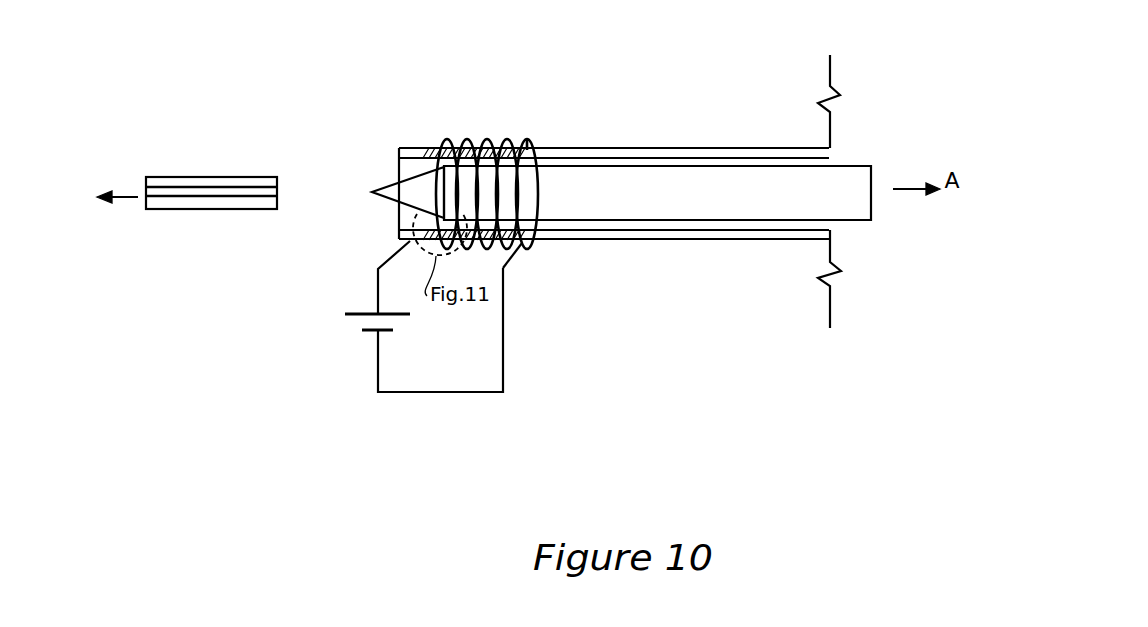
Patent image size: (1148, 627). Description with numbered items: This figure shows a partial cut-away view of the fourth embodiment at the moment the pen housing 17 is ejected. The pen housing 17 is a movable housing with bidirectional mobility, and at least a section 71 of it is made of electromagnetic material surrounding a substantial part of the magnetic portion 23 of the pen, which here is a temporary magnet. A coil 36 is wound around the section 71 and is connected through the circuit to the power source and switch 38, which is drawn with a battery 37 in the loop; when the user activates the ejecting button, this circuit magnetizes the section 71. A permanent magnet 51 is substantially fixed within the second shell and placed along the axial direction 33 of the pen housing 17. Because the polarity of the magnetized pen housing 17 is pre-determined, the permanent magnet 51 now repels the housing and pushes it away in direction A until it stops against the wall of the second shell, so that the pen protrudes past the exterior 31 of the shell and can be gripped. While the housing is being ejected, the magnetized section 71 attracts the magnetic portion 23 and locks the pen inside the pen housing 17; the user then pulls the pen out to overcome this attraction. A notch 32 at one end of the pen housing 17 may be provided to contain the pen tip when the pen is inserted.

The pen housing 17 is at (690, 147).
The magnetic portion 23 is at (467, 147).
The exterior 31 is at (832, 120).
The notch 32 is at (386, 180).
The axial direction 33 is at (103, 188).
The coil 36 is at (532, 137).
The battery 37 is at (350, 328).
The power source and switch 38 is at (438, 392).
The permanent magnet 51 is at (188, 180).
The section 71 is at (520, 243).